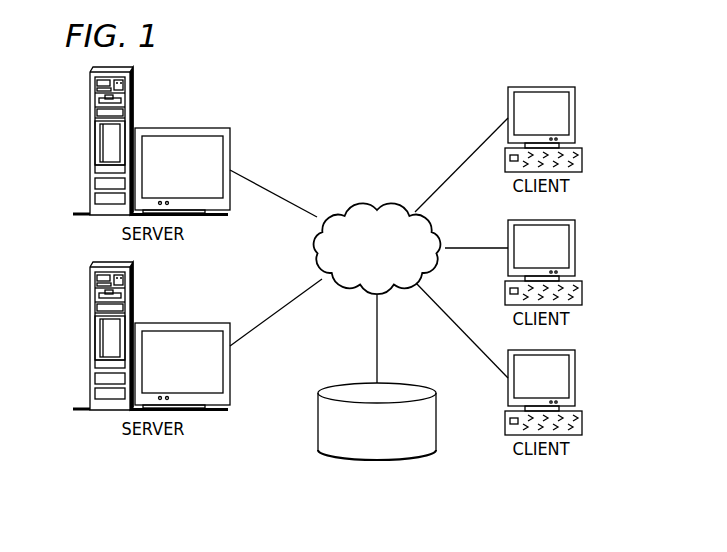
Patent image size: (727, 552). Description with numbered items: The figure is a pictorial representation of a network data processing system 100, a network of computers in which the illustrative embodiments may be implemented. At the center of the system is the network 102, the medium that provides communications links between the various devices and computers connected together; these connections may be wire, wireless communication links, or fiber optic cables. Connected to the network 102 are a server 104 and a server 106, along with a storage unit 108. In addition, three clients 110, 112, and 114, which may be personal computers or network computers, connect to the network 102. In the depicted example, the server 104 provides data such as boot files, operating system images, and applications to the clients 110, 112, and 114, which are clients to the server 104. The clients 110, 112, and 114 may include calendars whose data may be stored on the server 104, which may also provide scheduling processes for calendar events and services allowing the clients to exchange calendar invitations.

The network data processing system 100 is at (426, 94).
The network 102 is at (352, 201).
The server 104 is at (92, 143).
The server 106 is at (92, 338).
The storage unit 108 is at (360, 461).
The client 110 is at (576, 115).
The client 112 is at (576, 248).
The client 114 is at (576, 378).